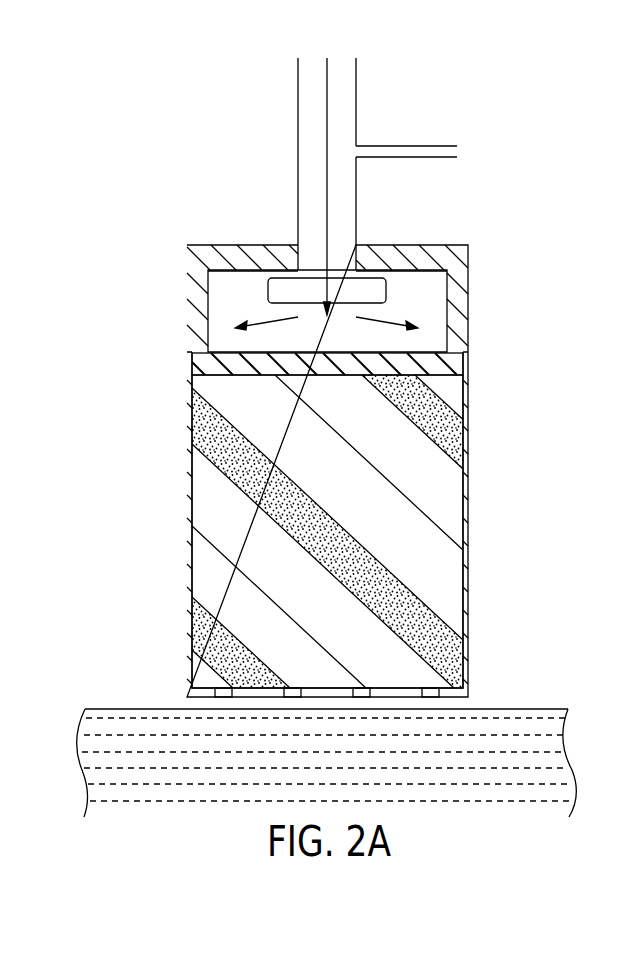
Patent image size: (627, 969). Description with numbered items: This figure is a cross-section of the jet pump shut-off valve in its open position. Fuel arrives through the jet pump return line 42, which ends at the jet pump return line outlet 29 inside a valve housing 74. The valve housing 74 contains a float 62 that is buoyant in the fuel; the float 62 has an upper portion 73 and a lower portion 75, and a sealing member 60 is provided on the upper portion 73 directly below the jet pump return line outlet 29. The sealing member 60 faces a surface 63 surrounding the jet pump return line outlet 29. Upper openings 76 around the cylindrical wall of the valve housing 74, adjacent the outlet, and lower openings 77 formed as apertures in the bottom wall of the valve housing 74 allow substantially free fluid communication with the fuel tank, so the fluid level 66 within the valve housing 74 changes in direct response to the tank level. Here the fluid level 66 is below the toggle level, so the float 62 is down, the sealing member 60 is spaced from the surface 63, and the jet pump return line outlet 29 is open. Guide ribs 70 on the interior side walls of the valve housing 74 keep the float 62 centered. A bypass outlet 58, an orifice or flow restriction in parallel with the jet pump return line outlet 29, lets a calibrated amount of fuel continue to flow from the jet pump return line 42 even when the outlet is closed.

The jet pump return line 42 is at (358, 78).
The bypass outlet 58 is at (419, 146).
The jet pump return line outlet 29 is at (357, 246).
The surface surrounding the jet pump return line outlet 63 is at (263, 280).
The valve housing 74 is at (468, 303).
The upper openings 76 is at (386, 288).
The sealing member 60 is at (453, 370).
The float 62 is at (468, 507).
The guide ribs 70 is at (187, 547).
The upper portion 73 is at (235, 400).
The lower portion 75 is at (200, 632).
The lower openings 77 is at (431, 699).
The fluid level 66 is at (170, 709).